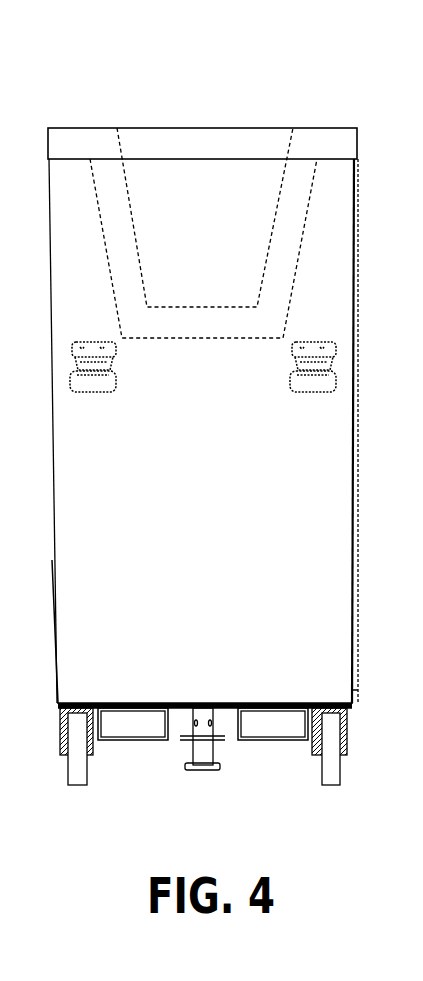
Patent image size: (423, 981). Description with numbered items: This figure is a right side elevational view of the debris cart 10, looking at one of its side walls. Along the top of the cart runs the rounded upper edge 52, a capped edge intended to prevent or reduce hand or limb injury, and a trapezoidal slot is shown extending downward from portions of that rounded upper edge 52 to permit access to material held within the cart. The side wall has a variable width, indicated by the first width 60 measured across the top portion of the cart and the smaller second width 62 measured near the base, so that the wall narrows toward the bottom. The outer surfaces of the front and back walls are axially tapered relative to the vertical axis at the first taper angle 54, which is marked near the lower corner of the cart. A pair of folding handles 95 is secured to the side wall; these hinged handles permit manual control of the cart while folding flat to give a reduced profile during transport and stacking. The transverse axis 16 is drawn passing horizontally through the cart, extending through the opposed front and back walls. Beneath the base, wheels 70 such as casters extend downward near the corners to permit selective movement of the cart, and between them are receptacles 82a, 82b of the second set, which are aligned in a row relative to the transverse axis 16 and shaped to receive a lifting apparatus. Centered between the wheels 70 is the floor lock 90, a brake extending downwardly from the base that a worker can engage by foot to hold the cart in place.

The cart 10 is at (151, 78).
The rounded upper edge 52 is at (101, 128).
The first width 60 is at (357, 128).
The second width 62 is at (349, 560).
The transverse axis 16 is at (48, 402).
The folding handles 95 is at (117, 380).
The first taper angle 54 is at (313, 689).
The wheels 70 is at (78, 786).
The receptacle of second set 82b is at (117, 741).
The receptacle of second set 82a is at (258, 741).
The floor lock 90 is at (198, 771).